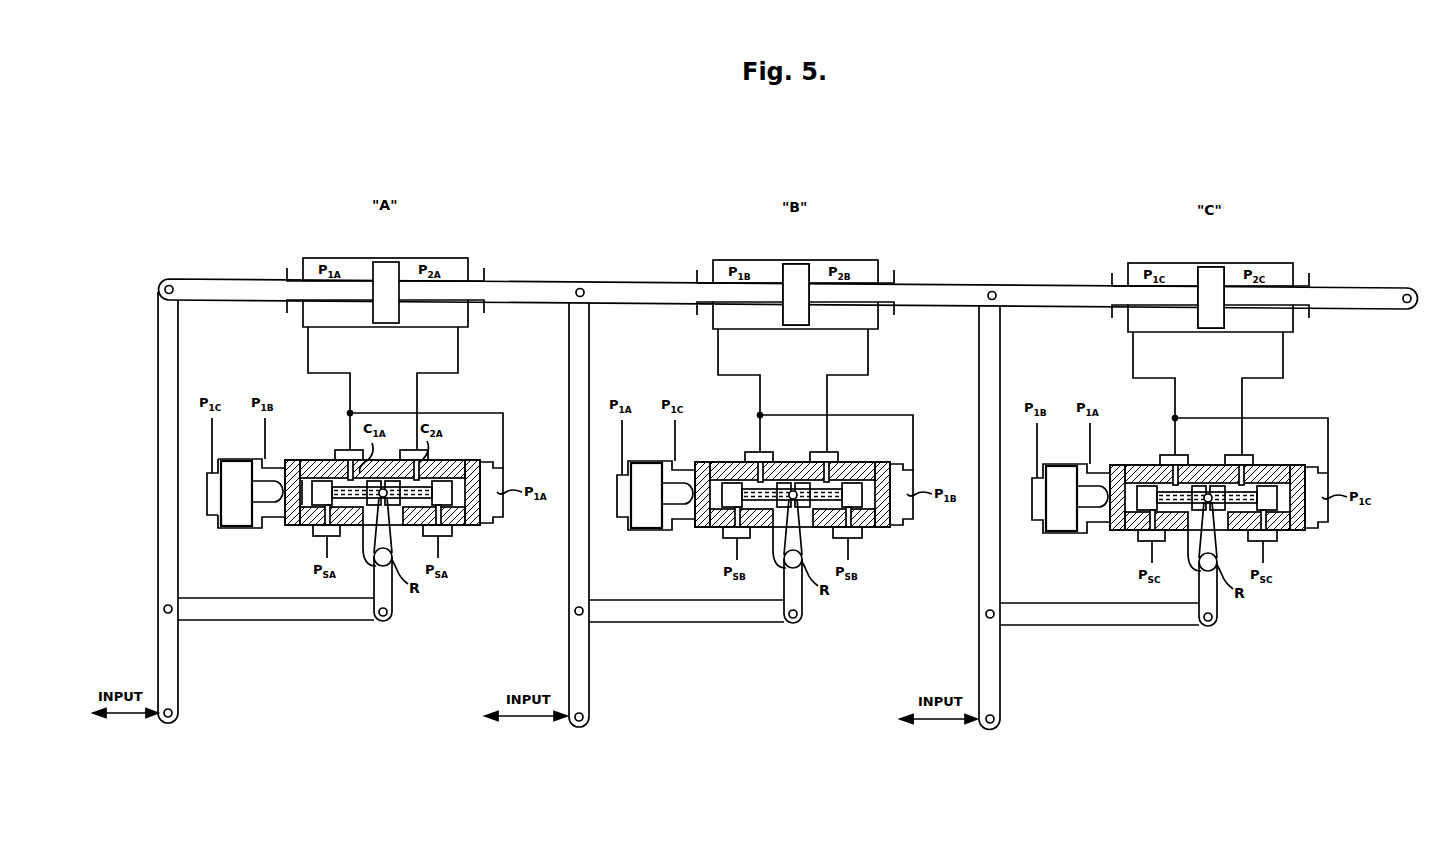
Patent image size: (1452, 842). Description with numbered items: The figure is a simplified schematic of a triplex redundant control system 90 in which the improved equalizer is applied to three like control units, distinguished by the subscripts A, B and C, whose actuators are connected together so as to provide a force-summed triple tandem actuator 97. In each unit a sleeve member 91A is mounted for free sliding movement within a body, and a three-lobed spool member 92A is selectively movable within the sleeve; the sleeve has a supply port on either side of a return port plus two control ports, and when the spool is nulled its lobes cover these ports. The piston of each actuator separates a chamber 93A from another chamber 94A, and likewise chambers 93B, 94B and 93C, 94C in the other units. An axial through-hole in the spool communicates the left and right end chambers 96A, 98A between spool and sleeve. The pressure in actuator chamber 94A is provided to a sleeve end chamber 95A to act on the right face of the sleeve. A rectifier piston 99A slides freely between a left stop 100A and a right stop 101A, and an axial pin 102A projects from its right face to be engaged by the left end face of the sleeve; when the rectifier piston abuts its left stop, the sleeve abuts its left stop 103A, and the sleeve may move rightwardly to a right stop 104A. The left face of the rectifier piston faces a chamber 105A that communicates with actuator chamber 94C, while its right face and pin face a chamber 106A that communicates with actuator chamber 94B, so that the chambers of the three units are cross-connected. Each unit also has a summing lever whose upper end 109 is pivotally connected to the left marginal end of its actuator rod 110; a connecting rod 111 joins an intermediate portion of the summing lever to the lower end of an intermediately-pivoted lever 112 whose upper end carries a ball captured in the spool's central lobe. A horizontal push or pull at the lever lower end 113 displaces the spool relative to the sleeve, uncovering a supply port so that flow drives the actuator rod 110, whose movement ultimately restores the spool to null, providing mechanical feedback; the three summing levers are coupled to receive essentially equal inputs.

The triplex redundant control system 90 is at (905, 210).
The triple tandem actuator 97 is at (616, 272).
The upper end of summing lever 109 is at (160, 289).
The actuator rod 110 is at (221, 281).
The connecting rod 111 is at (286, 621).
The intermediately-pivoted lever 112 is at (396, 604).
The lower end of summing lever 113 is at (178, 718).
The sleeve member 91A is at (452, 452).
The spool member 92A is at (452, 522).
The actuator chamber 93A is at (344, 313).
The actuator chamber 94A is at (427, 313).
The actuator chamber 93B is at (754, 315).
The actuator chamber 94B is at (837, 315).
The actuator chamber 93C is at (1169, 318).
The actuator chamber 94C is at (1252, 318).
The sleeve end chamber 95A is at (498, 472).
The spool left end chamber 96A is at (302, 480).
The spool right end chamber 98A is at (481, 450).
The rectifier piston 99A is at (226, 497).
The left stop 100A is at (240, 528).
The right stop 101A is at (265, 538).
The axial pin 102A is at (262, 458).
The sleeve left stop 103A is at (288, 526).
The sleeve right stop 104A is at (492, 524).
The rectifier piston left chamber 105A is at (214, 481).
The rectifier piston right chamber 106A is at (262, 518).